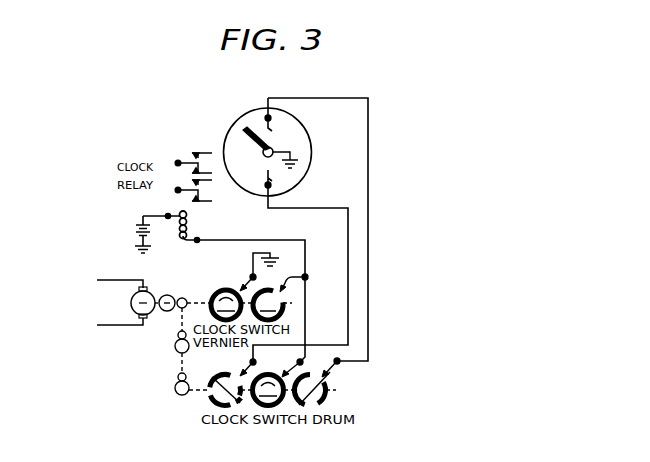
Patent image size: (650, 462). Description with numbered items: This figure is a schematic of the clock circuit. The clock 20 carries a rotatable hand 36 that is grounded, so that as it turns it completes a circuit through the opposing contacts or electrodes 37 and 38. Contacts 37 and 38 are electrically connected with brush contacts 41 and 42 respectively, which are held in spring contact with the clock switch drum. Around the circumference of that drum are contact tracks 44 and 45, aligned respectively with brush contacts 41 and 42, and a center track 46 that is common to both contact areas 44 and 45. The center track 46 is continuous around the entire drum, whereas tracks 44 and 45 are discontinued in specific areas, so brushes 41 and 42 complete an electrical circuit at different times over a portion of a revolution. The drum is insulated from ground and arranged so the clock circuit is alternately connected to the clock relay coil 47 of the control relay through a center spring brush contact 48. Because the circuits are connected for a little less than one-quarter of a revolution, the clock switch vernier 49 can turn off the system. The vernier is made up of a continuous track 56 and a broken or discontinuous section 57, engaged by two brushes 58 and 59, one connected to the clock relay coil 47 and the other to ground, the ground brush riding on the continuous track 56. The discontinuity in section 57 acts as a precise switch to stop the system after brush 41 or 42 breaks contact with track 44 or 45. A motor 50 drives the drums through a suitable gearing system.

The clock 20 is at (249, 160).
The rotatable hand 36 is at (246, 127).
The contact 37 is at (273, 131).
The contact 38 is at (273, 182).
The clock relay coil 47 is at (188, 223).
The clock switch vernier 49 is at (237, 275).
The motor 50 is at (147, 316).
The continuous track 56 is at (214, 296).
The discontinuous section 57 is at (284, 309).
The brush 58 is at (257, 278).
The brush 59 is at (290, 282).
The brush contact 41 is at (339, 365).
The brush contact 42 is at (251, 364).
The contact track 44 is at (328, 393).
The contact track 45 is at (214, 378).
The center track 46 is at (261, 402).
The center spring brush contact 48 is at (296, 363).